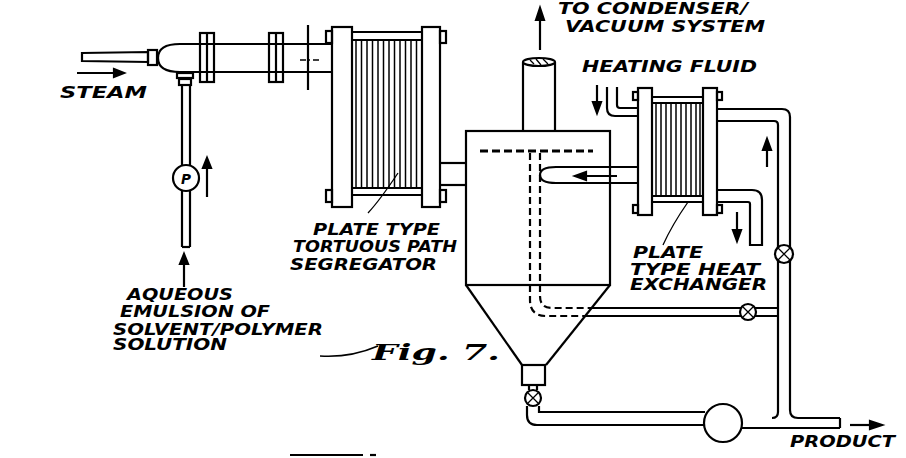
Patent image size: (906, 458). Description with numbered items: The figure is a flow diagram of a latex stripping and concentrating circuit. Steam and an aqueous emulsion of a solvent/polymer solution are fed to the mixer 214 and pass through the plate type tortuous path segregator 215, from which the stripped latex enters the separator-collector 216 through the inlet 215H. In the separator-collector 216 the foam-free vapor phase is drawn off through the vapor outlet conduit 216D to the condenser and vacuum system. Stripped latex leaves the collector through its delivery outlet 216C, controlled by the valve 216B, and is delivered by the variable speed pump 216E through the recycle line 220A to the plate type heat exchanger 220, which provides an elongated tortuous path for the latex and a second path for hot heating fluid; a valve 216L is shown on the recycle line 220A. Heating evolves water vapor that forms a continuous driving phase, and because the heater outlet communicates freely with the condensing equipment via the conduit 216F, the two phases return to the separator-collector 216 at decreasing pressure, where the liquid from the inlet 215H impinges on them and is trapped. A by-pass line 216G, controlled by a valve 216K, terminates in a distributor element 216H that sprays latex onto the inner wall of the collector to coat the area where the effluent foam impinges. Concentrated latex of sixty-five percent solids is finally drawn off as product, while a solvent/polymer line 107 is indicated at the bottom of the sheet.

The mixer 214 is at (247, 48).
The plate type tortuous path segregator 215 is at (396, 22).
The inlet 215H is at (450, 163).
The separator-collector 216 is at (562, 342).
The vapor outlet conduit 216D is at (531, 100).
The distributor element 216H is at (515, 157).
The conduit 216F is at (597, 187).
The heat exchanger 220 is at (687, 96).
The recycle line 220A is at (790, 373).
The valve 216L is at (794, 254).
The valve 216K is at (754, 310).
The by-pass line 216G is at (723, 317).
The collector delivery outlet 216C is at (546, 377).
The valve 216B is at (524, 400).
The variable speed pump 216E is at (720, 388).
The solvent/polymer line 107 is at (335, 442).